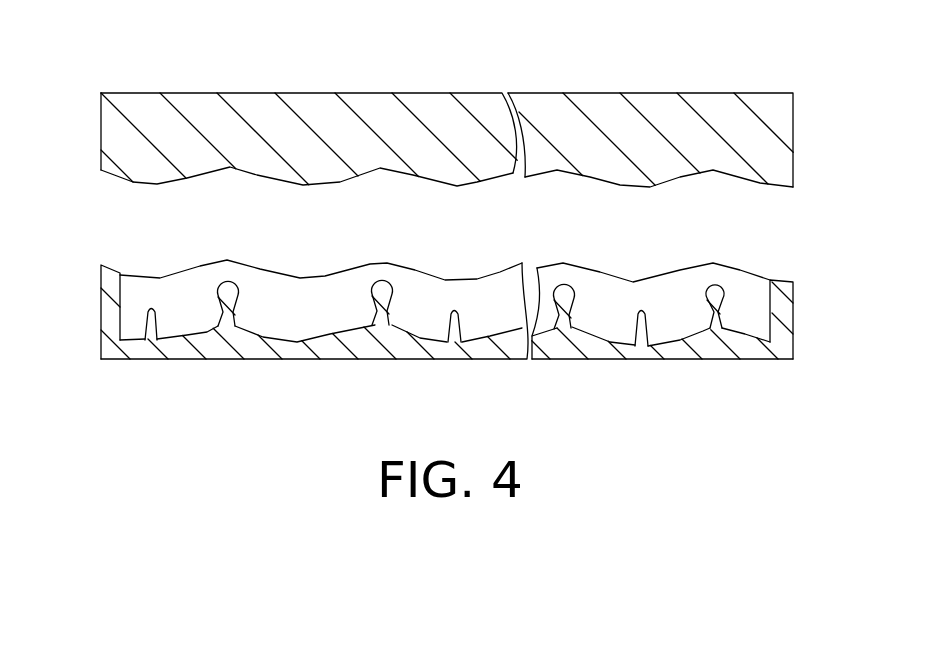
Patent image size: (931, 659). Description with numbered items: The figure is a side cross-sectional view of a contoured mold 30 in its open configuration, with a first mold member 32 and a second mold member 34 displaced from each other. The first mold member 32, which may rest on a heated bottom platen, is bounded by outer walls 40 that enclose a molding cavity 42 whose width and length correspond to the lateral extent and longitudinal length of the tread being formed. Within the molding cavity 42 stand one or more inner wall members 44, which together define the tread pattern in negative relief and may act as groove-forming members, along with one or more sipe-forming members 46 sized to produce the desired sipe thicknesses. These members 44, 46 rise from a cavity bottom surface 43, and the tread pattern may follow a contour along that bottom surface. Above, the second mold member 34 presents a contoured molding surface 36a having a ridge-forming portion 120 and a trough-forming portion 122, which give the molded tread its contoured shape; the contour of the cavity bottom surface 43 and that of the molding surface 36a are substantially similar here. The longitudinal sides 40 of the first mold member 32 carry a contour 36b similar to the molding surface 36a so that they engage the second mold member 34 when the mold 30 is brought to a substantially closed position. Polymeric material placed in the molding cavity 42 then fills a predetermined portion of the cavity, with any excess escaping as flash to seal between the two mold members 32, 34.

The contoured mold 30 is at (168, 397).
The first mold member 32 is at (722, 362).
The second mold member 34 is at (490, 121).
The contoured molding surface 36a is at (400, 173).
The contour 36b is at (165, 295).
The outer walls 40 is at (108, 280).
The molding cavity 42 is at (431, 270).
The cavity bottom surface 43 is at (196, 331).
The inner wall members 44 is at (378, 302).
The sipe-forming members 46 is at (303, 322).
The ridge-forming portion 120 is at (637, 84).
The trough-forming portion 122 is at (718, 84).